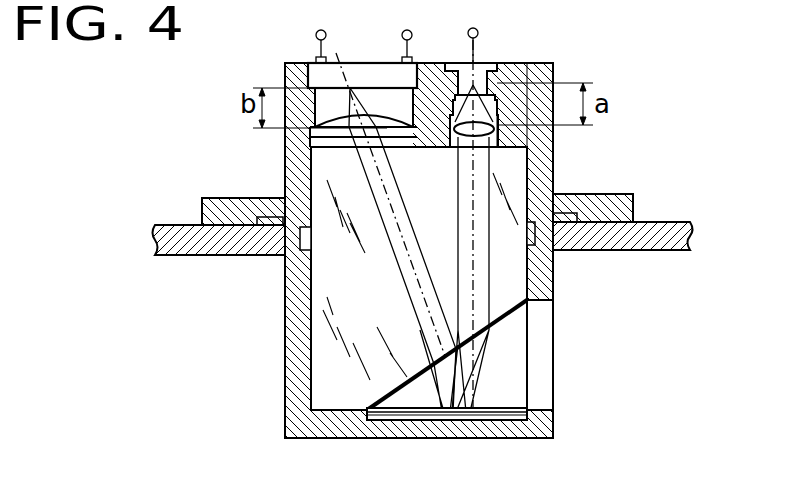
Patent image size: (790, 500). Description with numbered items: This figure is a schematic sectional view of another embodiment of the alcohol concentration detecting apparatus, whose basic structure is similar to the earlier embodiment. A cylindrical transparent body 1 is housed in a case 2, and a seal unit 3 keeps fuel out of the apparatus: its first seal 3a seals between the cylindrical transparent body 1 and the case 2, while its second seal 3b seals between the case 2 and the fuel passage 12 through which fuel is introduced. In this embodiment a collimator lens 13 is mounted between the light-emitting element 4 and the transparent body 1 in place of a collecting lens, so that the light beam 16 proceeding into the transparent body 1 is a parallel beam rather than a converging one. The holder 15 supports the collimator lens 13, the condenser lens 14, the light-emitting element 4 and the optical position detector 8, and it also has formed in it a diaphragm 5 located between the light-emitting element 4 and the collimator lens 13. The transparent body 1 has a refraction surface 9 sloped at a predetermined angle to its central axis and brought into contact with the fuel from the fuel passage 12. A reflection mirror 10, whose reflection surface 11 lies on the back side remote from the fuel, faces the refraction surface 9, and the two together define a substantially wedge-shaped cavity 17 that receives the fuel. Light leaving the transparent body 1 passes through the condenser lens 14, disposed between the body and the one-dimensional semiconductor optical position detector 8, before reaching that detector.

The cylindrical transparent body 1 is at (332, 387).
The case 2 is at (290, 385).
The seal unit 3 is at (420, 278).
The first seal 3a is at (283, 262).
The second seal 3b is at (283, 258).
The light-emitting element 4 is at (474, 62).
The diaphragm 5 is at (503, 92).
The optical position detector 8 is at (373, 62).
The refraction surface 9 is at (397, 422).
The reflection mirror 10 is at (420, 422).
The reflection surface 11 is at (457, 423).
The fuel passage 12 is at (538, 362).
The collimator lens 13 is at (545, 133).
The condenser lens 14 is at (336, 122).
The holder 15 is at (505, 85).
The light beam 16 is at (505, 285).
The wedge-shaped cavity 17 is at (500, 395).